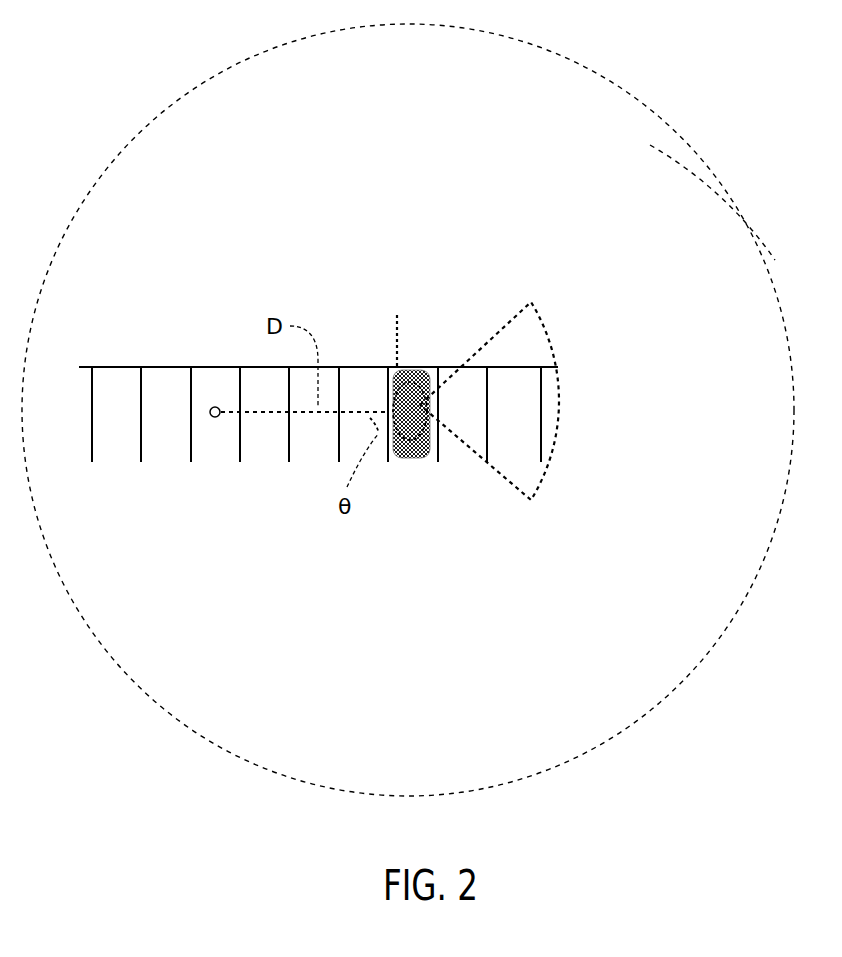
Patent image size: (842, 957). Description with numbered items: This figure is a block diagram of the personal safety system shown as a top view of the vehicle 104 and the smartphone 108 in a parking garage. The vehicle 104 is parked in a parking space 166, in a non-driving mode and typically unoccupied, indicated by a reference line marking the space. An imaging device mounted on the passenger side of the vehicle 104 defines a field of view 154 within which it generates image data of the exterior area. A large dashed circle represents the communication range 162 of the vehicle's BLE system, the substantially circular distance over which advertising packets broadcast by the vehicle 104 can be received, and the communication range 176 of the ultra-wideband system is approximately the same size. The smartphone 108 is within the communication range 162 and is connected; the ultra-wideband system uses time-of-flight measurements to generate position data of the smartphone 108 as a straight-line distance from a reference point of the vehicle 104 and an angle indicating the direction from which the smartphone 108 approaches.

The vehicle 104 is at (407, 458).
The smartphone 108 is at (216, 418).
The field of view 154 is at (548, 323).
The communication range 162 is at (653, 110).
The parking space 166 is at (413, 352).
The communication range 176 is at (728, 192).